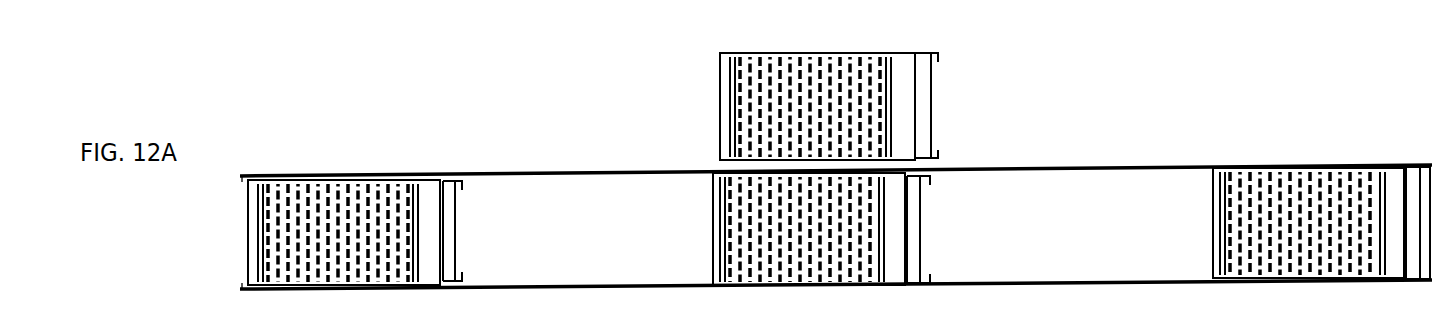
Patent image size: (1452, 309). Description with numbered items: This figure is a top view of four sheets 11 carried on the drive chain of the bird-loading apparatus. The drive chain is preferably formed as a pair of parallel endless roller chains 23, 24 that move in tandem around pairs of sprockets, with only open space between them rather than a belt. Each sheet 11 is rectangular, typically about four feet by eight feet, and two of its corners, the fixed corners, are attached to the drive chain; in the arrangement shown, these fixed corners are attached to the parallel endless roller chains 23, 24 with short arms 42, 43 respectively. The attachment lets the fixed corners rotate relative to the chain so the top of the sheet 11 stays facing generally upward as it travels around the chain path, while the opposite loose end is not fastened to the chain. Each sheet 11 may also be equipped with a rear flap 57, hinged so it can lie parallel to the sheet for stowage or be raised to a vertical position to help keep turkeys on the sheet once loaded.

The sheet 11 is at (248, 241).
The endless roller chain 23 is at (1115, 167).
The endless roller chain 24 is at (1068, 283).
The short arm 42 is at (937, 55).
The short arm 43 is at (938, 155).
The rear flap 57 is at (921, 307).